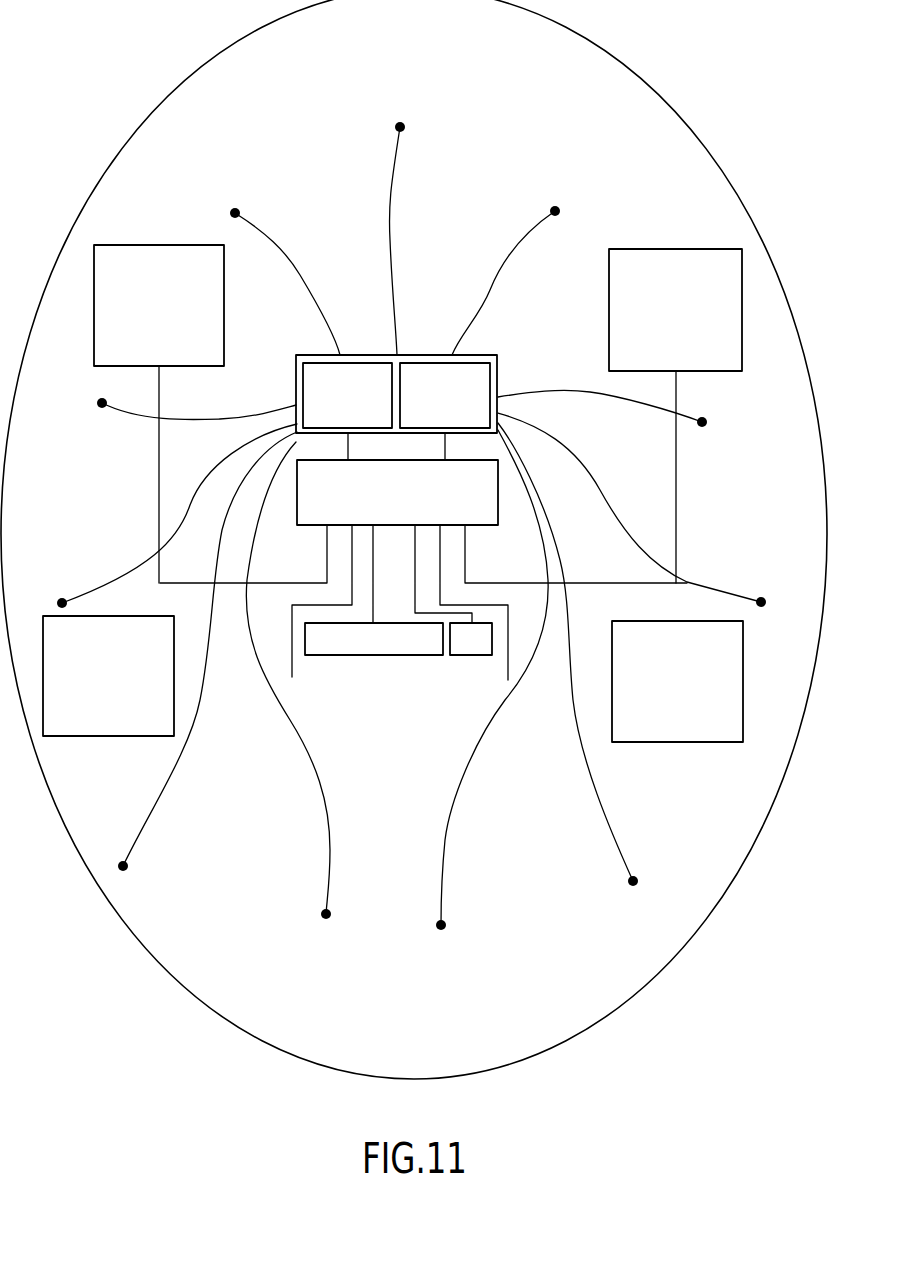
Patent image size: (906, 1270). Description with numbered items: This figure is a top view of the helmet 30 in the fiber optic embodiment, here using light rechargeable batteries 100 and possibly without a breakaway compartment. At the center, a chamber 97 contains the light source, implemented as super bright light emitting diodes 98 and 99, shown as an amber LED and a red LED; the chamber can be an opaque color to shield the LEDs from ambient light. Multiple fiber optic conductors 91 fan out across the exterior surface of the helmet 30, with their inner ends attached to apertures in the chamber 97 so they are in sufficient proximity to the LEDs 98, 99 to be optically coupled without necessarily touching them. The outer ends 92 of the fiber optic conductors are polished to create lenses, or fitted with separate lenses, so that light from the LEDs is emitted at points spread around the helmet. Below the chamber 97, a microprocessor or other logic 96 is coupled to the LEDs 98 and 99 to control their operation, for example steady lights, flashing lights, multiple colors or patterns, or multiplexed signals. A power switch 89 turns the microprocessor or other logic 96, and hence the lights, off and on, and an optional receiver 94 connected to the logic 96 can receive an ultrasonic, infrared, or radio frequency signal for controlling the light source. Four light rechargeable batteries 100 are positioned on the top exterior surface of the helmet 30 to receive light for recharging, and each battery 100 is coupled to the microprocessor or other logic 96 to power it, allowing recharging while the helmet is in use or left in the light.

The helmet 30 is at (658, 1048).
The power switch 89 is at (467, 656).
The fiber optic conductors 91 is at (290, 258).
The ends of the fiber optic conductors 92 is at (400, 127).
The receiver 94 is at (392, 655).
The microprocessor or other logic 96 is at (498, 520).
The chamber 97 is at (497, 368).
The light emitting diode 98 is at (423, 363).
The light emitting diode 99 is at (352, 363).
The light rechargeable battery 100 is at (94, 302).